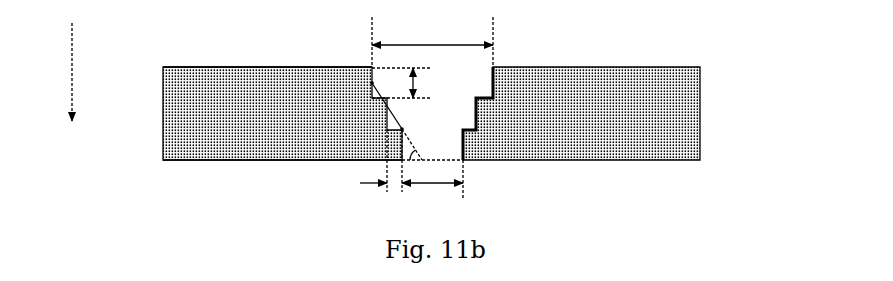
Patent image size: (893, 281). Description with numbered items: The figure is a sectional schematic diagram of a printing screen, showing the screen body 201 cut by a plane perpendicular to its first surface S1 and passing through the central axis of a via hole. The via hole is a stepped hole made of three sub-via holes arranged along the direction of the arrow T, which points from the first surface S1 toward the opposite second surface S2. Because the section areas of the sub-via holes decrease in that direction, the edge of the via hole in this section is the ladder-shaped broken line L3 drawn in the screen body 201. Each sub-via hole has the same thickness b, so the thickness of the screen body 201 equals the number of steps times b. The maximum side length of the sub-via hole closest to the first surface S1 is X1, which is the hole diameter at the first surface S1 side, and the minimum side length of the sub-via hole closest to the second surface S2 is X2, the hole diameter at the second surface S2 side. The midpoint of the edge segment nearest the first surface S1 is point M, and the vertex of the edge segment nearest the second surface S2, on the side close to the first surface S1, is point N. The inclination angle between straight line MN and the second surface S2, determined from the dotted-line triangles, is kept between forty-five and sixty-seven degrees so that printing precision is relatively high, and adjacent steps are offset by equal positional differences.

The screen body 201 is at (685, 83).
The broken line L3 is at (467, 159).
The first surface S1 is at (216, 65).
The second surface S2 is at (226, 161).
The arrow T is at (85, 72).
The maximum side length of first sub-via hole section X1 is at (432, 38).
The minimum side length of last sub-via hole section X2 is at (432, 193).
The thickness of one sub-via hole b is at (419, 83).
The point M is at (379, 82).
The point N is at (397, 121).